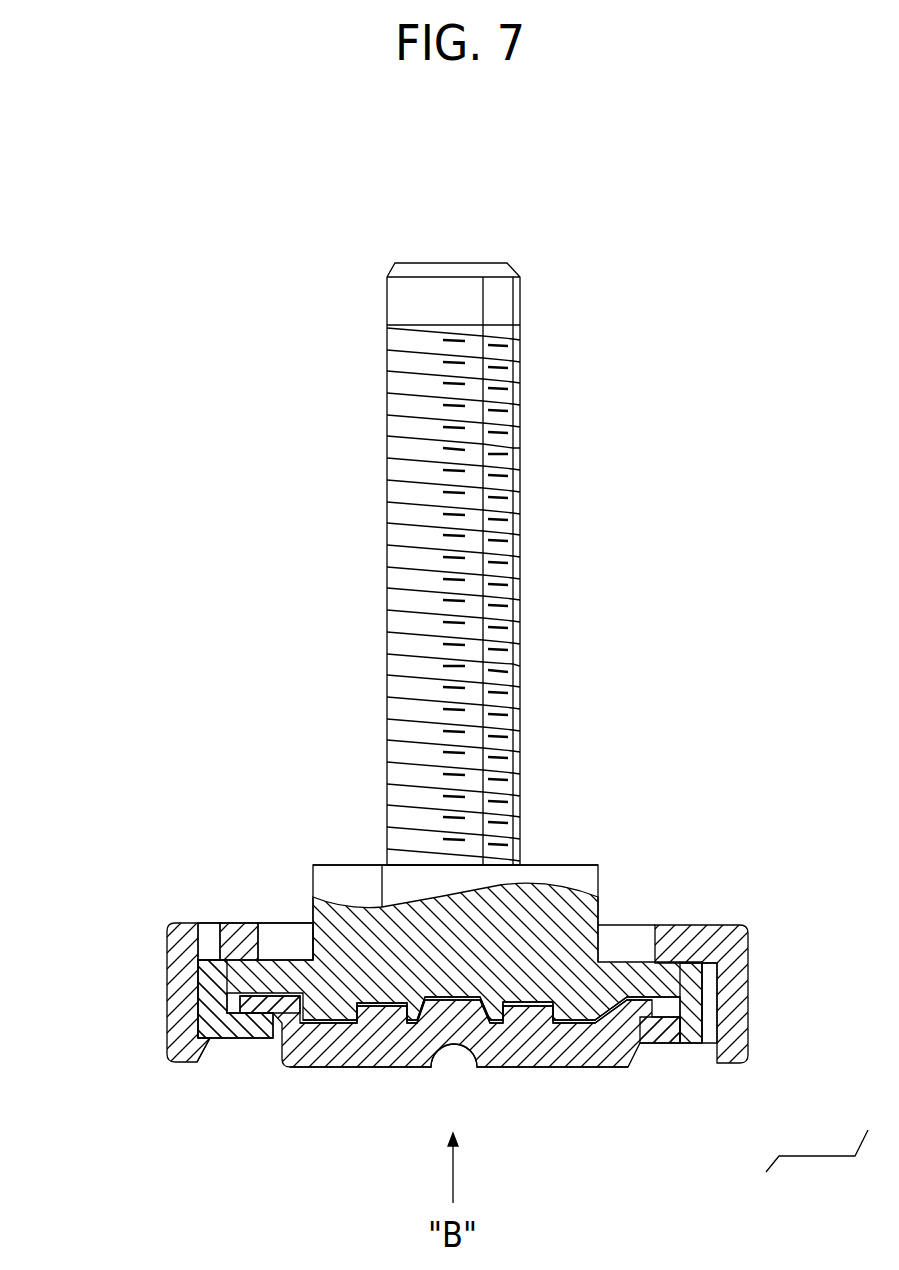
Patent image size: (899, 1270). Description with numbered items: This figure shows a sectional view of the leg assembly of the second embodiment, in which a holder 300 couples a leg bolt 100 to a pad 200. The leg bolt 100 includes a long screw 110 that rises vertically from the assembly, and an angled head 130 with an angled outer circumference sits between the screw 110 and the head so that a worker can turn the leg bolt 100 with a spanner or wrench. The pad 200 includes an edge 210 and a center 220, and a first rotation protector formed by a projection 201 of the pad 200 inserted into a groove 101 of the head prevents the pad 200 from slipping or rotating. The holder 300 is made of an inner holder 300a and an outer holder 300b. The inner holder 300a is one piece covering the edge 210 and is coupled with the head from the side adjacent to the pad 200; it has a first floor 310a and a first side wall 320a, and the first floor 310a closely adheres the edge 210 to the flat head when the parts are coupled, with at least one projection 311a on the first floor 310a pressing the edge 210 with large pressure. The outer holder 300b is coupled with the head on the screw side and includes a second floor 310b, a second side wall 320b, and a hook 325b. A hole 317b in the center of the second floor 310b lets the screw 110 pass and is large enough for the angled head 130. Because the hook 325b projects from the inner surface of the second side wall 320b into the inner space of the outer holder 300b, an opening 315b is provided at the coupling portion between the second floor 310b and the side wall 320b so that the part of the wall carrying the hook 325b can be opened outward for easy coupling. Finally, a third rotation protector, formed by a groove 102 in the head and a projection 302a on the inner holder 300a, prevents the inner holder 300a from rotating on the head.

The leg bolt 100 is at (601, 864).
The groove 101 is at (543, 1003).
The groove 102 is at (687, 978).
The screw 110 is at (398, 650).
The angled head 130 is at (348, 873).
The pad 200 is at (505, 1069).
The projection 201 is at (380, 1005).
The edge 210 is at (242, 1045).
The center 220 is at (572, 1050).
The holder 300 is at (817, 1163).
The inner holder 300a is at (200, 962).
The outer holder 300b is at (167, 1046).
The projection 302a is at (718, 975).
The first floor 310a is at (258, 1047).
The second floor 310b is at (240, 930).
The projection 311a is at (690, 1052).
The opening 315b is at (207, 933).
The hole 317b is at (287, 940).
The first side wall 320a is at (197, 1013).
The second side wall 320b is at (190, 975).
The hook 325b is at (203, 1048).